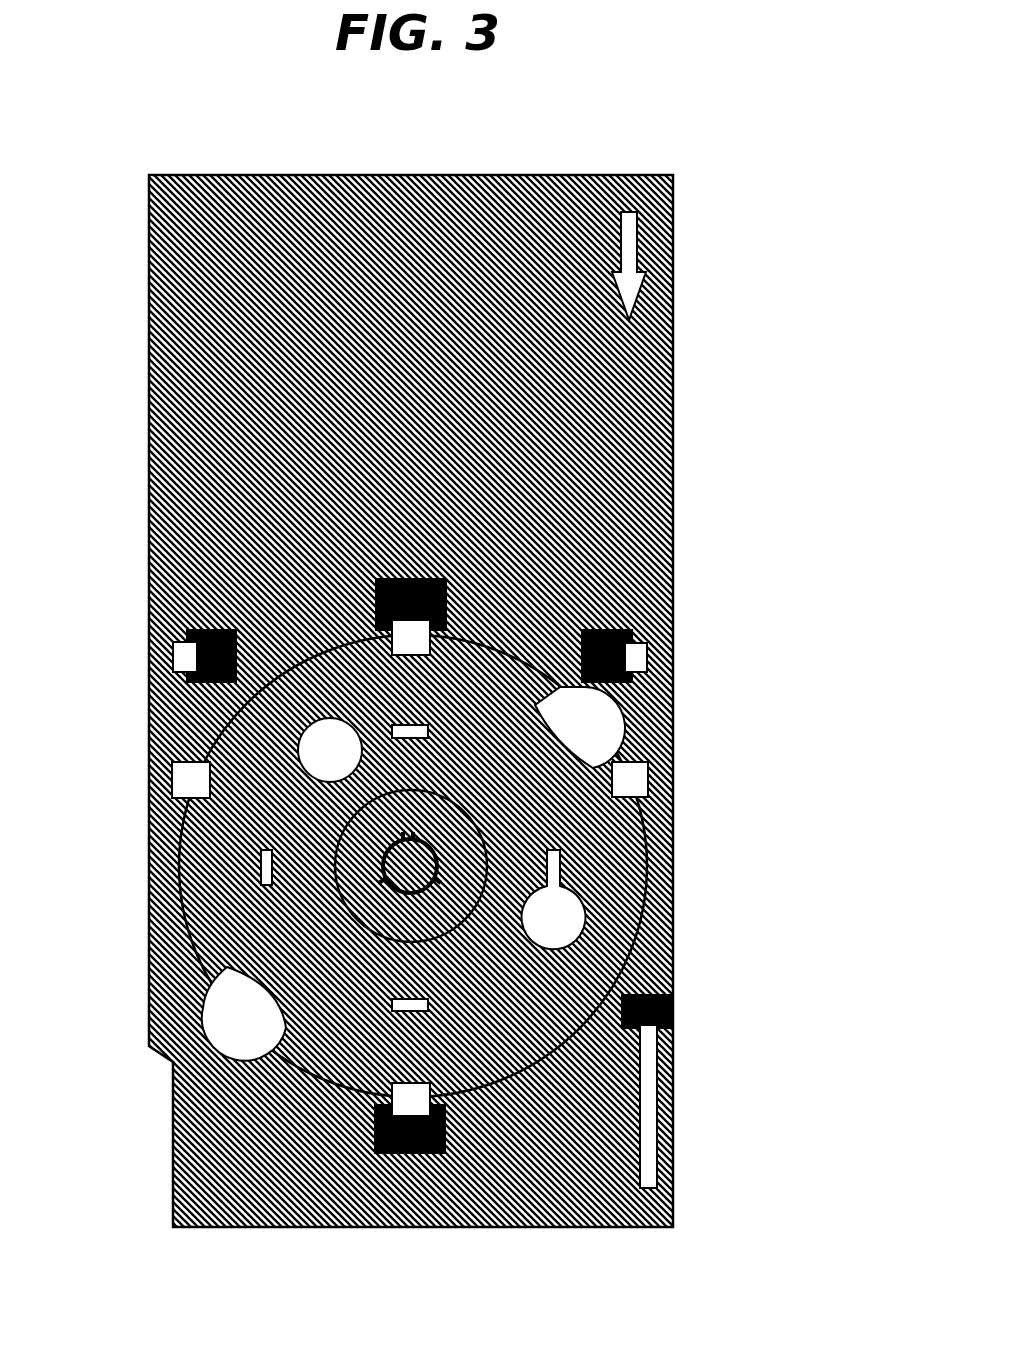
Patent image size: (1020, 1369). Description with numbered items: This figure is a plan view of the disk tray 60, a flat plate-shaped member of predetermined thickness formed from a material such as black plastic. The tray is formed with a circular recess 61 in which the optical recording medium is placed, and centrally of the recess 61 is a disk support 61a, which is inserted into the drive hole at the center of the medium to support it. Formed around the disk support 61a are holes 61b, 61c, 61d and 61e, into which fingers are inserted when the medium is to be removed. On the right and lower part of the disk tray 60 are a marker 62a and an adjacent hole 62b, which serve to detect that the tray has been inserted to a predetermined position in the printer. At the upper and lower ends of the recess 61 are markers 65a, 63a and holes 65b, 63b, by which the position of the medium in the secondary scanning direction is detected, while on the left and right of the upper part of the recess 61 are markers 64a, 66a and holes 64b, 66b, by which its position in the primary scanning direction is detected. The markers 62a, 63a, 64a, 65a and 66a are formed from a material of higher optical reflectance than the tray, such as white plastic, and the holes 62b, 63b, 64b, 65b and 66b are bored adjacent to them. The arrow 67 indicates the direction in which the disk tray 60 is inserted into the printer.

The disk tray 60 is at (514, 158).
The arrow 67 is at (625, 238).
The recess 61 is at (643, 852).
The disk support 61a is at (372, 846).
The hole 61b is at (612, 728).
The hole 61c is at (222, 1016).
The hole 61d is at (322, 755).
The hole 61e is at (565, 918).
The marker 62a is at (668, 1010).
The hole 62b is at (655, 1066).
The marker 63a is at (415, 1152).
The hole 63b is at (425, 1110).
The marker 64a is at (198, 632).
The hole 64b is at (186, 650).
The marker 65a is at (448, 580).
The hole 65b is at (420, 640).
The marker 66a is at (612, 631).
The hole 66b is at (640, 652).